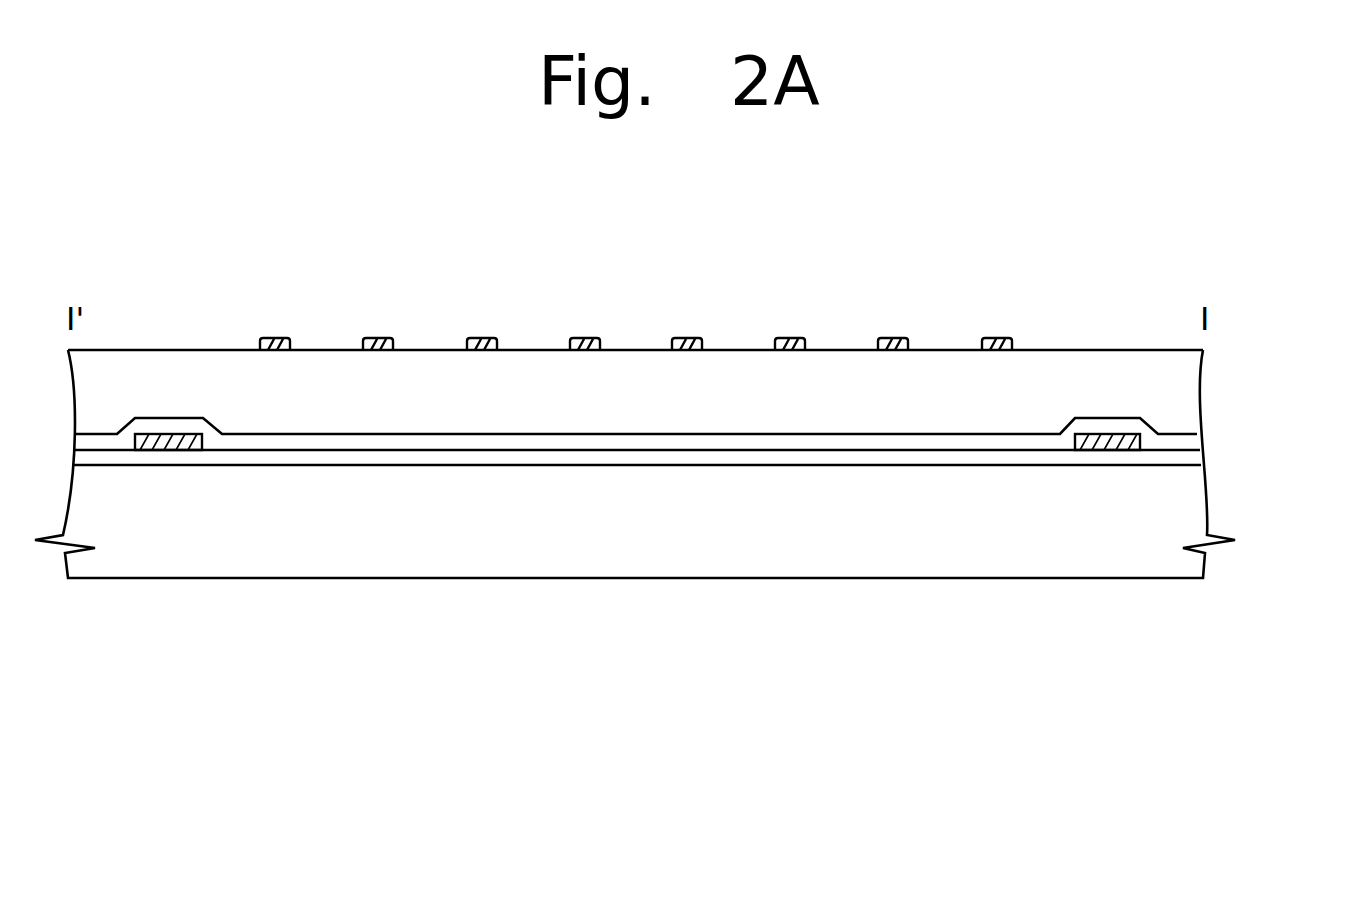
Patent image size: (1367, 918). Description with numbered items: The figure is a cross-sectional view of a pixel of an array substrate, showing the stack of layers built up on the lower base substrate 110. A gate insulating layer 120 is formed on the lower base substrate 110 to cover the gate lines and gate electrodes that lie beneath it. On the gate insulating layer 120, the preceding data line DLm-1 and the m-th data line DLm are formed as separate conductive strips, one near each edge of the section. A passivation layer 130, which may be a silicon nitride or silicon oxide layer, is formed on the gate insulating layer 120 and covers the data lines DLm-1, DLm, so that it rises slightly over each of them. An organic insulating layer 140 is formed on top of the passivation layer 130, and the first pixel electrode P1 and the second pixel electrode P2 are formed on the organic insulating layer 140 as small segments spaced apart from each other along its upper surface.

The lower base substrate 110 is at (1192, 507).
The gate insulating layer 120 is at (1183, 460).
The passivation layer 130 is at (1183, 442).
The organic insulating layer 140 is at (1185, 376).
The first pixel electrode P1 is at (377, 337).
The second pixel electrode P2 is at (479, 337).
The (m-1)th data line DLm-1 is at (170, 450).
The m-th data line DLm is at (1108, 450).